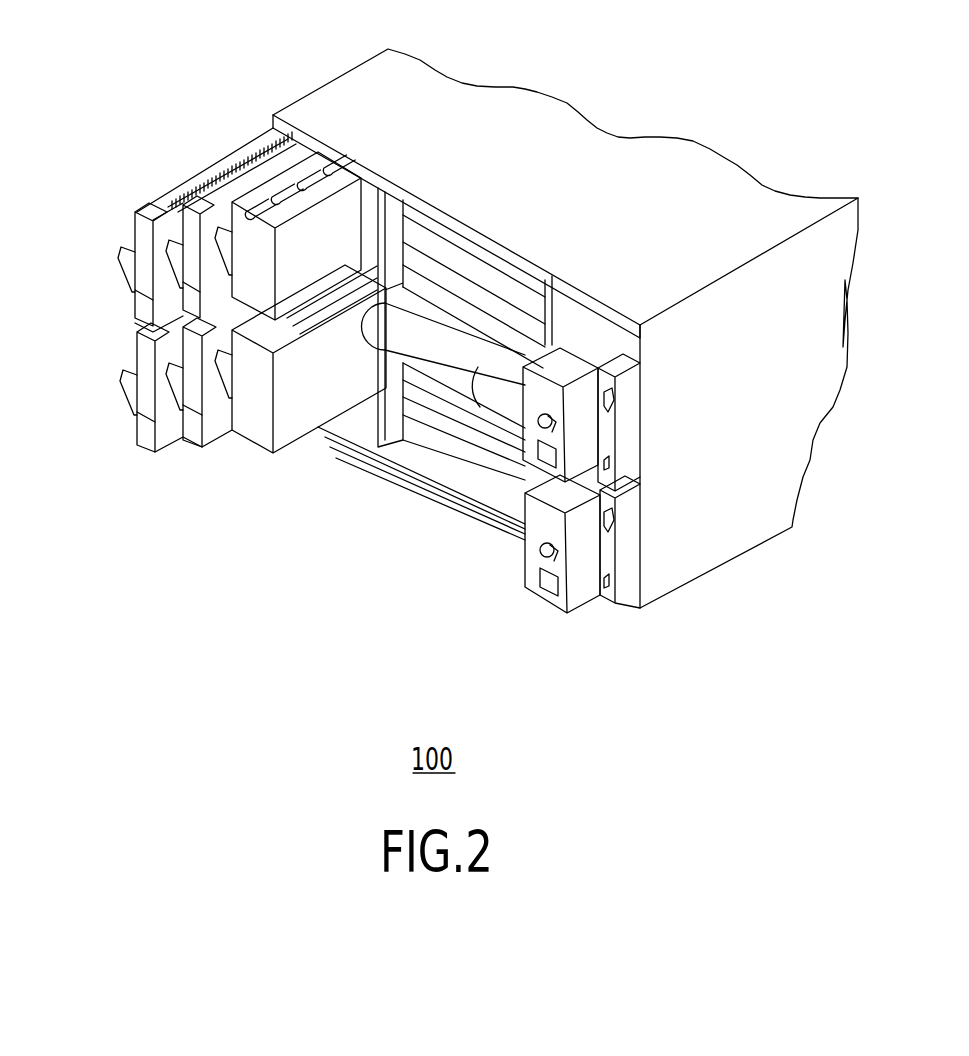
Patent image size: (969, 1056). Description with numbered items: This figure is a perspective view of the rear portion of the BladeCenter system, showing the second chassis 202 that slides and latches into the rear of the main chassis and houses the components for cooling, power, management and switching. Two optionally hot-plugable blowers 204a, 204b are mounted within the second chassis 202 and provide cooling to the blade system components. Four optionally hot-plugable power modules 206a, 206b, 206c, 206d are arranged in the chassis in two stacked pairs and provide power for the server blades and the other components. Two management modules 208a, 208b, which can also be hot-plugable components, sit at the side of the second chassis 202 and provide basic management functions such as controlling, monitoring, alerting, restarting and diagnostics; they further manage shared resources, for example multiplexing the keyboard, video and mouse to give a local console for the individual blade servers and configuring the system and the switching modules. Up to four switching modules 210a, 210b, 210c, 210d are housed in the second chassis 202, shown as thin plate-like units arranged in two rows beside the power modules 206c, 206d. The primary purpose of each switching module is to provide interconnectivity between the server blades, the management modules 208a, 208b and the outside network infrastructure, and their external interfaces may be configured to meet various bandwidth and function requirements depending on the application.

The second chassis 202 is at (360, 73).
The blower 204a is at (477, 308).
The blower 204b is at (463, 443).
The power module 206a is at (560, 365).
The power module 206b is at (527, 562).
The power module 206c is at (300, 175).
The power module 206d is at (247, 433).
The management module 208a is at (627, 392).
The management module 208b is at (600, 598).
The switching module 210a is at (200, 203).
The switching module 210b is at (190, 437).
The switching module 210c is at (153, 207).
The switching module 210d is at (142, 423).